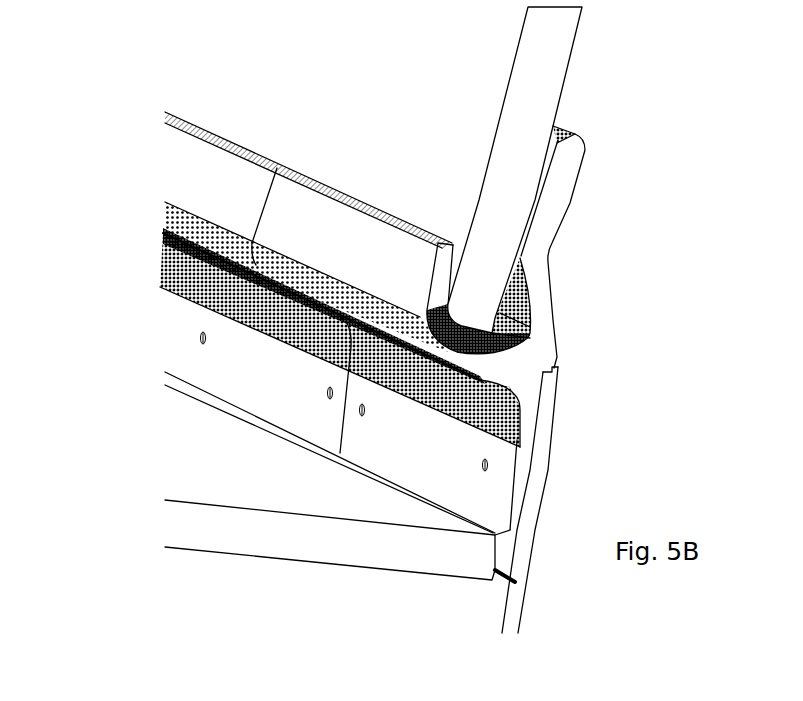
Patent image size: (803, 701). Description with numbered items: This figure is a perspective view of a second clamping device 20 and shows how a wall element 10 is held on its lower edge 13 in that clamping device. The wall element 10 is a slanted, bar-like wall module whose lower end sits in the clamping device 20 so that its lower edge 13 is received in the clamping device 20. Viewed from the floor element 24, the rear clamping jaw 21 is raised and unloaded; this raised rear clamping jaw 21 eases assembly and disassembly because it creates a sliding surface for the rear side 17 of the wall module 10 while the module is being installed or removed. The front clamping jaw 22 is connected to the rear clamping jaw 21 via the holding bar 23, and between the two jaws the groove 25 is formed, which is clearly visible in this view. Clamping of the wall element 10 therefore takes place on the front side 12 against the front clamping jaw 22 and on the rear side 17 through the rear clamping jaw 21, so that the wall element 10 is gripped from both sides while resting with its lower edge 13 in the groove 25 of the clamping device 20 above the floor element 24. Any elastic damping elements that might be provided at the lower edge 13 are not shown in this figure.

The wall element 10 is at (450, 180).
The front side 12 is at (493, 97).
The rear side 17 is at (572, 97).
The front clamping jaw 22 is at (292, 232).
The second clamping device 20 is at (280, 320).
The rear clamping jaw 21 is at (550, 198).
The lower edge 13 is at (477, 302).
The groove 25 is at (473, 343).
The holding bar 23 is at (525, 450).
The floor element 24 is at (436, 560).